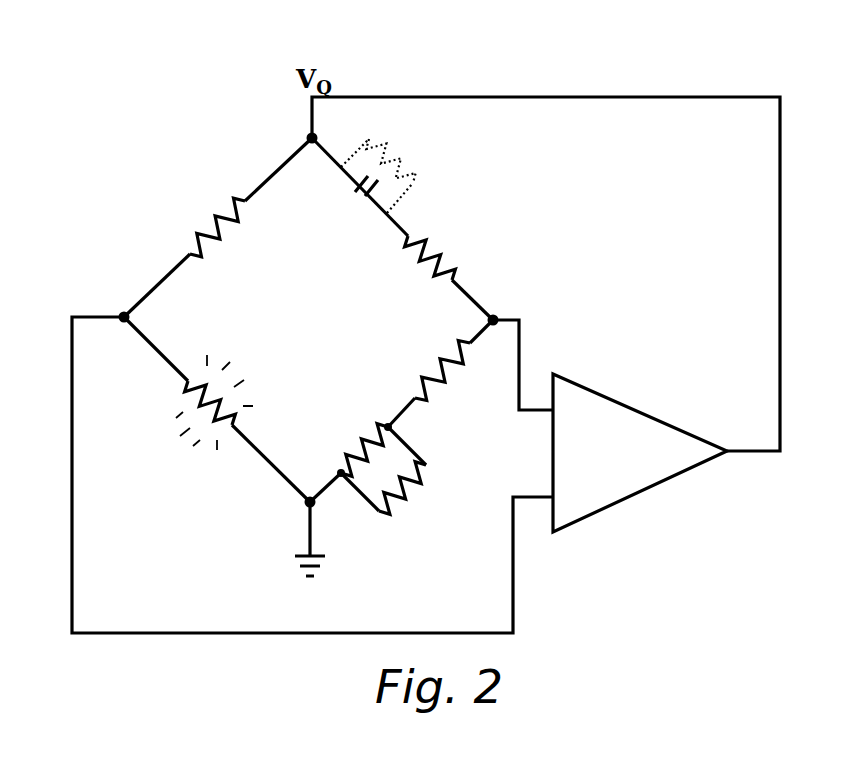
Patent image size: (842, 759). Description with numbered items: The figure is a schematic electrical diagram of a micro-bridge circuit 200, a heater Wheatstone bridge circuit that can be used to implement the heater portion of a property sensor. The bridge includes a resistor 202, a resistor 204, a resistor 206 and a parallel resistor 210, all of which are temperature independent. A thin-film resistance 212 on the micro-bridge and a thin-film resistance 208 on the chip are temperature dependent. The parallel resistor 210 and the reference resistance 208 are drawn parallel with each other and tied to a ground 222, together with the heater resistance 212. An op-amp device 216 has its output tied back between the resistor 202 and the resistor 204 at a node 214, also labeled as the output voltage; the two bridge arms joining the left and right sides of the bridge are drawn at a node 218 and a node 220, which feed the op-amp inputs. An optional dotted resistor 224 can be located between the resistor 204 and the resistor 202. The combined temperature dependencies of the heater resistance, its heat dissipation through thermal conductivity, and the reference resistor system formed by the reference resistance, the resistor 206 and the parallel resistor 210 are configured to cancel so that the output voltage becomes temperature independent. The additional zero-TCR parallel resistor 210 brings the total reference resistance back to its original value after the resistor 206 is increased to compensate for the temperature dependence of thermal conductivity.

The micro-bridge circuit 200 is at (103, 102).
The resistor 202 is at (232, 238).
The resistor 204 is at (416, 274).
The resistor 206 is at (446, 396).
The thin-film resistance 208 is at (341, 476).
The parallel resistor 210 is at (404, 508).
The thin-film resistance 212 is at (190, 409).
The node 214 is at (310, 137).
The op-amp device 216 is at (633, 406).
The bridge node 218 is at (122, 316).
The bridge node 220 is at (494, 319).
The ground 222 is at (309, 503).
The optional resistor 224 is at (418, 195).